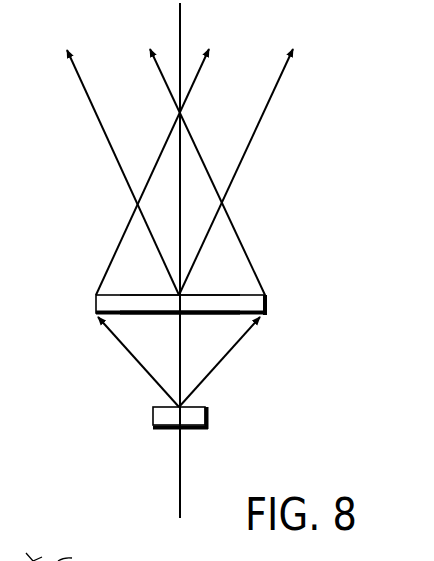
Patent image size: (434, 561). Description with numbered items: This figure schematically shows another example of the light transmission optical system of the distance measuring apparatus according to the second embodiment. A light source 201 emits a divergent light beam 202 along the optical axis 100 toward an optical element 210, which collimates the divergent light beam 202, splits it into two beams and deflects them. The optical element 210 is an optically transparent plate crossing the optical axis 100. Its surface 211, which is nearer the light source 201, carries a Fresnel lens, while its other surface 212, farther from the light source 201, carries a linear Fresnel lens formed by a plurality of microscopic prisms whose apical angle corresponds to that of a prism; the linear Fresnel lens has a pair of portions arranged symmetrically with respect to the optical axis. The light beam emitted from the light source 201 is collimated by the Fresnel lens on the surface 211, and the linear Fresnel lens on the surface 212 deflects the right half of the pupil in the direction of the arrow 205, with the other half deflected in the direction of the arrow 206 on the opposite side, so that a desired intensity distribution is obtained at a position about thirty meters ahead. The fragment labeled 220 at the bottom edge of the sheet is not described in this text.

The optical axis 100 is at (181, 20).
The light source 201 is at (209, 417).
The divergent light beam 202 is at (137, 361).
The arrow 205 is at (110, 143).
The reflected light beam 206 is at (250, 143).
The optical element 210 is at (268, 303).
The surface 211 is at (198, 315).
The another surface 212 is at (215, 295).
The reflecting member 220 is at (42, 557).